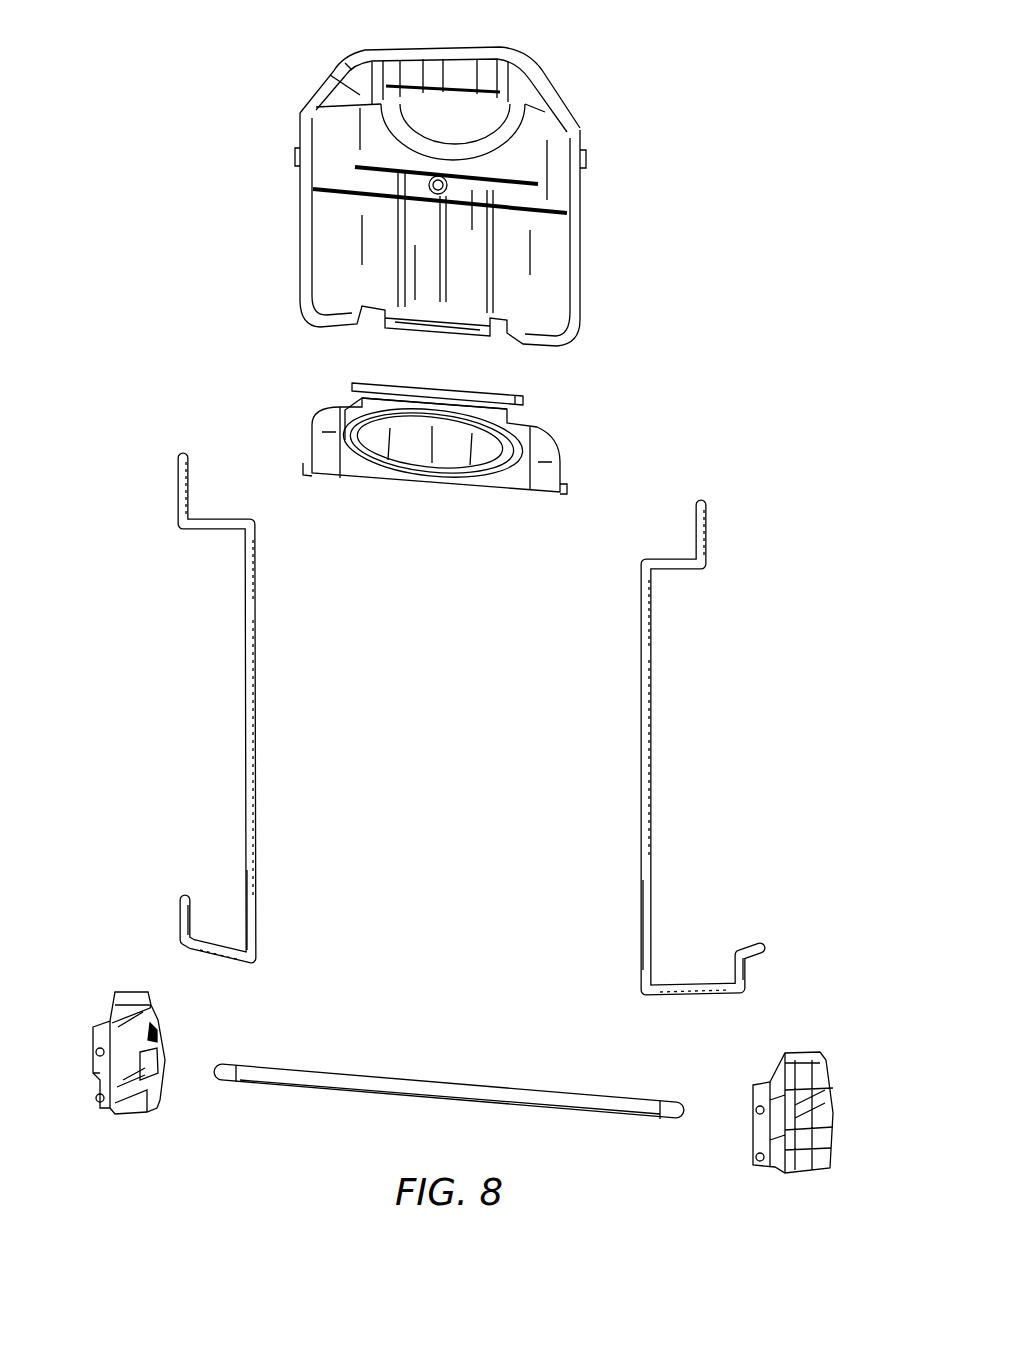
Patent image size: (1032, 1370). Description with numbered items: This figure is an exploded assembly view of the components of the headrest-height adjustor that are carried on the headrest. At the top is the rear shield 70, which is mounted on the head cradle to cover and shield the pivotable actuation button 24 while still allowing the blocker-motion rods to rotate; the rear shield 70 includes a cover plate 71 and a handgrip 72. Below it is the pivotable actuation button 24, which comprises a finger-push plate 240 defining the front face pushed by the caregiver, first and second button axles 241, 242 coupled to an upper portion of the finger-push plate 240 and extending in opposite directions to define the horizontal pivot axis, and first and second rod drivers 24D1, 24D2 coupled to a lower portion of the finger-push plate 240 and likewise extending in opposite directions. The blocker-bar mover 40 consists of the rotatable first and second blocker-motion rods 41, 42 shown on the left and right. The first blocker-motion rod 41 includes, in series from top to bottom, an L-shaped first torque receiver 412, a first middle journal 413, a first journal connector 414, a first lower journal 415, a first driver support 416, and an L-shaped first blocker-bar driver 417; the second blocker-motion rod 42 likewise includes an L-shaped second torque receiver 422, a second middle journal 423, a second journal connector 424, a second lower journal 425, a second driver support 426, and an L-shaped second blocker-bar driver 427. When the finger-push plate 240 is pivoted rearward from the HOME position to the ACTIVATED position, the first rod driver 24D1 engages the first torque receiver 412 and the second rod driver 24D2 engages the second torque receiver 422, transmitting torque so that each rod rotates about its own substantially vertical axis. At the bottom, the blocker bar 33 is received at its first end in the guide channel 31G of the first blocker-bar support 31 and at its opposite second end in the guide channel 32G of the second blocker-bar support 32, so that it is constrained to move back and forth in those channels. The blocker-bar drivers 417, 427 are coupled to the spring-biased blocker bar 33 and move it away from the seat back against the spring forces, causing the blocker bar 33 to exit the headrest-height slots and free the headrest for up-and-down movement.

The rear shield 70 is at (494, 192).
The cover plate 71 is at (560, 238).
The handgrip 72 is at (528, 88).
The pivotable actuation button 24 is at (442, 445).
The finger-push plate 240 is at (553, 453).
The first button axle 241 is at (352, 383).
The second button axle 242 is at (523, 396).
The first rod driver 24D1 is at (306, 473).
The second rod driver 24D2 is at (564, 494).
The blocker-bar mover 40 is at (426, 737).
The first blocker-motion rod 41 is at (213, 732).
The second blocker-motion rod 42 is at (660, 737).
The first torque receiver 412 is at (164, 489).
The first middle journal 413 is at (245, 552).
The first journal connector 414 is at (245, 720).
The first lower journal 415 is at (258, 893).
The first driver support 416 is at (222, 957).
The first blocker-bar driver 417 is at (165, 912).
The second torque receiver 422 is at (717, 518).
The second middle journal 423 is at (655, 595).
The second journal connector 424 is at (652, 707).
The second lower journal 425 is at (643, 873).
The second driver support 426 is at (700, 995).
The second blocker-bar driver 427 is at (728, 945).
The first blocker-bar support 31 is at (167, 1024).
The guide channel 31G is at (165, 1078).
The second blocker-bar support 32 is at (814, 1088).
The guide channel 32G is at (832, 1094).
The blocker bar 33 is at (406, 1062).